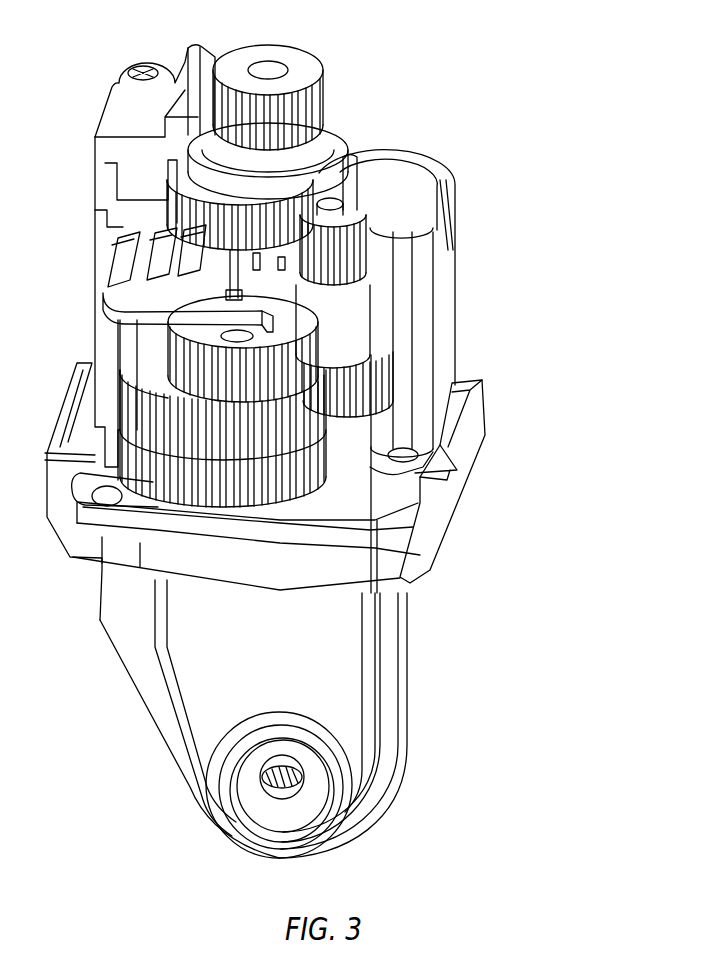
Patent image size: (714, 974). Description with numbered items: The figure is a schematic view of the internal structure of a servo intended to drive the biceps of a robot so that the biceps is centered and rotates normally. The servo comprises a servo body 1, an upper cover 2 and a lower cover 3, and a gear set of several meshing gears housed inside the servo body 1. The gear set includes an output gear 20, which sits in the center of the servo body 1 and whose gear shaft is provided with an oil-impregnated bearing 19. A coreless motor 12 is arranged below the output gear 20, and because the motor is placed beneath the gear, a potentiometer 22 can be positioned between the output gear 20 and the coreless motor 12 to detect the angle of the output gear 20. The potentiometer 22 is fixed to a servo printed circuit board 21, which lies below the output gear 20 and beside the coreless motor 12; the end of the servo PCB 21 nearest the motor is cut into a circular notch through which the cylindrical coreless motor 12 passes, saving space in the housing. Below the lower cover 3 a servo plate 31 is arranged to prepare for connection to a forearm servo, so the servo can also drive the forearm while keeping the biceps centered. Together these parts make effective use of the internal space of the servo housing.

The servo body 1 is at (425, 262).
The upper cover 2 is at (140, 110).
The lower cover 3 is at (350, 645).
The coreless motor 12 is at (368, 304).
The oil-impregnated bearing 19 is at (310, 182).
The output gear 20 is at (280, 127).
The servo printed circuit board 21 is at (270, 313).
The potentiometer 22 is at (258, 281).
The servo plate 31 is at (292, 782).